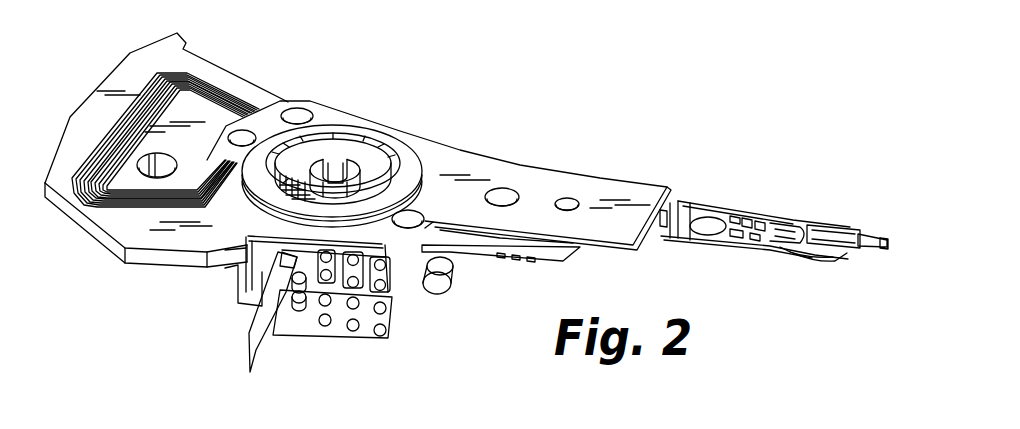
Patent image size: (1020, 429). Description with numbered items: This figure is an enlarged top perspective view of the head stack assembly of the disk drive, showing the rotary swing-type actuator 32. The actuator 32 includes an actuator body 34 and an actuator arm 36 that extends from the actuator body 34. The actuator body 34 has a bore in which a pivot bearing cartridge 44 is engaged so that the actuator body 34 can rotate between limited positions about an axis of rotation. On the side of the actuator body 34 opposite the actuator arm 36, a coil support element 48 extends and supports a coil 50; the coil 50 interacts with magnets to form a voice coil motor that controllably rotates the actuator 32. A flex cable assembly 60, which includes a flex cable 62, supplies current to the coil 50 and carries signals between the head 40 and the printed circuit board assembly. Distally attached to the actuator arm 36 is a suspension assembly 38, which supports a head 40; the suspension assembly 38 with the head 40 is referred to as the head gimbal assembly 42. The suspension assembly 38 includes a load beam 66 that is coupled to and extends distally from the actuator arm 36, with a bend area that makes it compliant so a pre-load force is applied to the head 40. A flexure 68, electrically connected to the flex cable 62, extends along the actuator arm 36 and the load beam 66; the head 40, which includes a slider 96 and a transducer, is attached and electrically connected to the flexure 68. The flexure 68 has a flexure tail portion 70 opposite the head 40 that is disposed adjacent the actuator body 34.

The actuator 32 is at (316, 103).
The actuator body 34 is at (353, 115).
The actuator arm 36 is at (493, 167).
The suspension assembly 38 is at (745, 215).
The head 40 is at (840, 262).
The head gimbal assembly 42 is at (795, 218).
The pivot bearing cartridge 44 is at (375, 175).
The coil support element 48 is at (130, 72).
The coil 50 is at (213, 87).
The flex cable assembly 60 is at (267, 337).
The flex cable 62 is at (260, 360).
The load beam 66 is at (688, 242).
The flexure 68 is at (477, 247).
The flexure tail portion 70 is at (402, 272).
The slider 96 is at (822, 273).